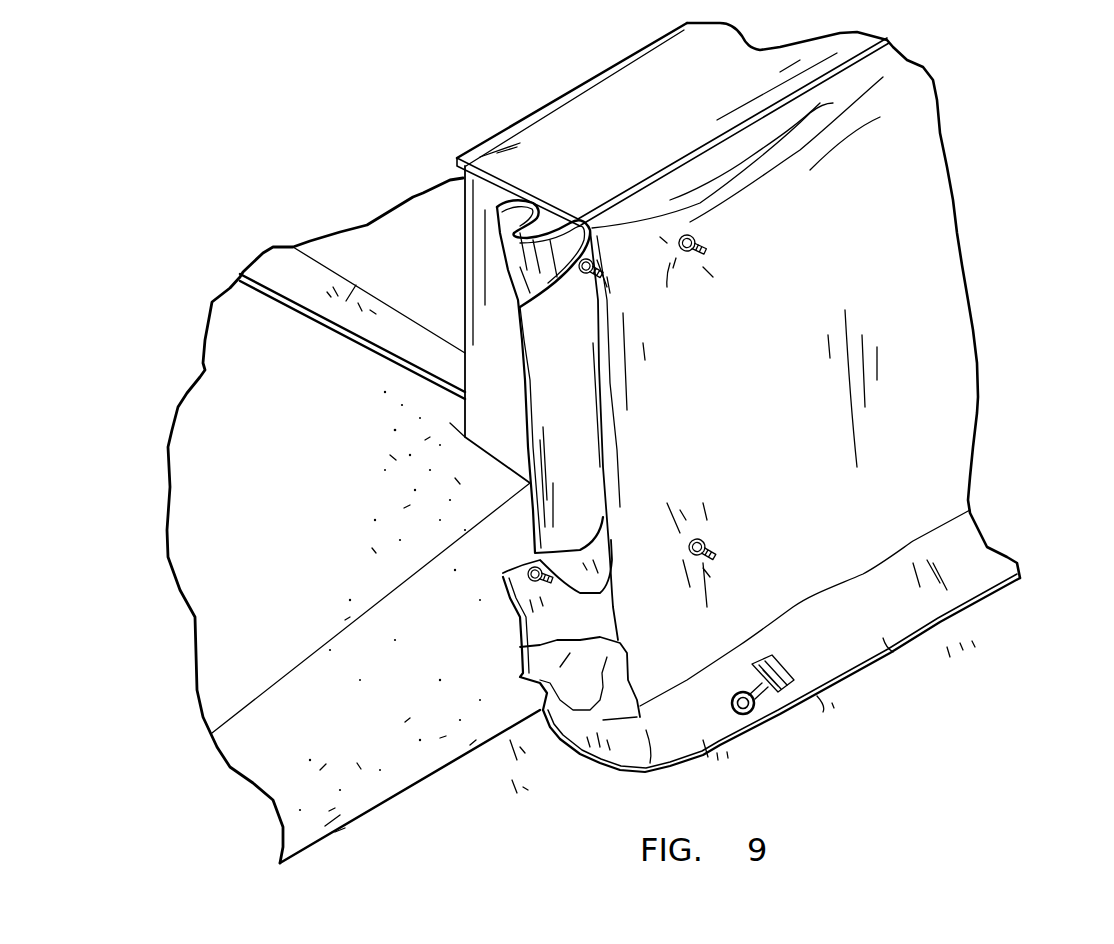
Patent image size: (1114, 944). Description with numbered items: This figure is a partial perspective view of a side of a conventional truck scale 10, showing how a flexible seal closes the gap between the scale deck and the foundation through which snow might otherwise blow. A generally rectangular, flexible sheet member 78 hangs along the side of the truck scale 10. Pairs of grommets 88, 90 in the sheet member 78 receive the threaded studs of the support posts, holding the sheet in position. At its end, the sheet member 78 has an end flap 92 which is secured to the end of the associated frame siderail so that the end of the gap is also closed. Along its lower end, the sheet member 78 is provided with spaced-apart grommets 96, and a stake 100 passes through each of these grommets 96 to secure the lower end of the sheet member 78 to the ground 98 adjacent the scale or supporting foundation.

The truck scale 10 is at (323, 210).
The sheet member 78 is at (925, 358).
The grommet 88 is at (705, 530).
The grommet 90 is at (692, 236).
The end flap 92 is at (515, 614).
The grommet 96 is at (757, 710).
The ground 98 is at (565, 840).
The stake 100 is at (782, 669).